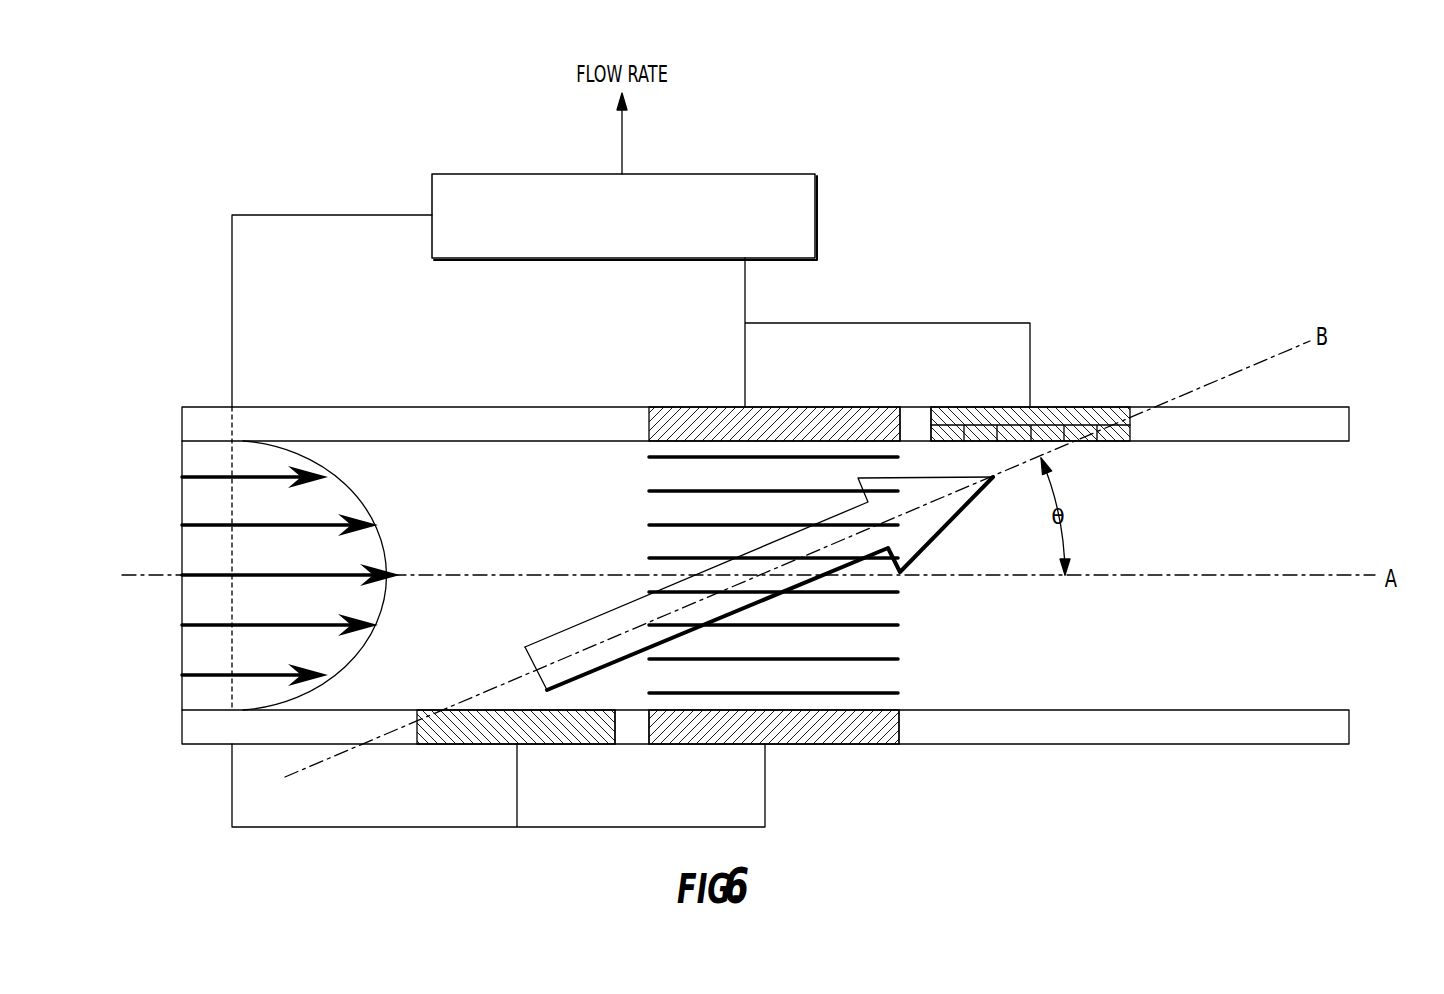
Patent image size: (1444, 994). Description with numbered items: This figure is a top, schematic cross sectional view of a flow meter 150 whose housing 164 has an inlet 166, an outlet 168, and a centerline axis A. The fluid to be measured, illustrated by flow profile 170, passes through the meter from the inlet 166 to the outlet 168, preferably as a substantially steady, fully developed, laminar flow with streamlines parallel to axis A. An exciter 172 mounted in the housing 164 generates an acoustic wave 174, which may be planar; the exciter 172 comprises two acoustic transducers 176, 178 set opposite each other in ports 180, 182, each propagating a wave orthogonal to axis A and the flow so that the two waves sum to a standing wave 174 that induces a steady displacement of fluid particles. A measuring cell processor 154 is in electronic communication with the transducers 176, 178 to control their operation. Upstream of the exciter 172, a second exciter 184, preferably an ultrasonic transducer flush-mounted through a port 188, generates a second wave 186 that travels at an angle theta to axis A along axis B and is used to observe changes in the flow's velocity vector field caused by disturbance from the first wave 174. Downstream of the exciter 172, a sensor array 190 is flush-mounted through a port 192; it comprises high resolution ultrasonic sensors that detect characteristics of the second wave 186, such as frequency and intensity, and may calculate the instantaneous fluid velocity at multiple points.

The flow meter 150 is at (1058, 227).
The measuring cell processor 154 is at (780, 174).
The housing 164 is at (392, 423).
The inlet 166 is at (170, 483).
The outlet 168 is at (1361, 457).
The flow profile 170 is at (373, 500).
The exciter 172 is at (673, 392).
The acoustic wave 174 is at (905, 659).
The acoustic transducer 176 is at (822, 407).
The acoustic transducer 178 is at (866, 735).
The port 180 is at (900, 407).
The port 182 is at (900, 744).
The second exciter 184 is at (443, 745).
The second wave 186 is at (547, 690).
The port 188 is at (615, 745).
The sensor array 190 is at (1084, 432).
The port 192 is at (1131, 424).